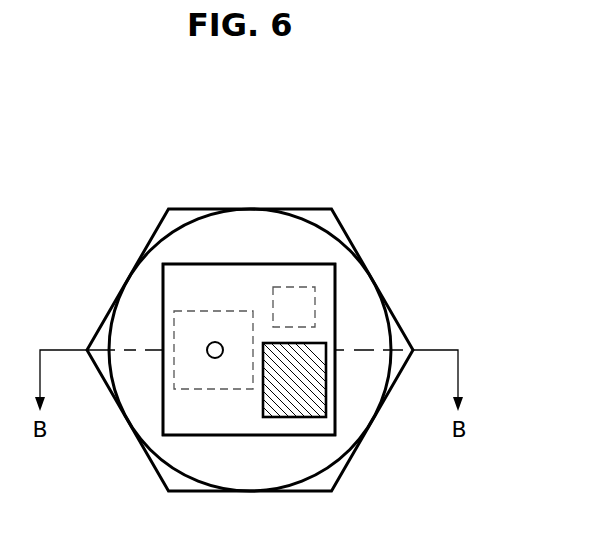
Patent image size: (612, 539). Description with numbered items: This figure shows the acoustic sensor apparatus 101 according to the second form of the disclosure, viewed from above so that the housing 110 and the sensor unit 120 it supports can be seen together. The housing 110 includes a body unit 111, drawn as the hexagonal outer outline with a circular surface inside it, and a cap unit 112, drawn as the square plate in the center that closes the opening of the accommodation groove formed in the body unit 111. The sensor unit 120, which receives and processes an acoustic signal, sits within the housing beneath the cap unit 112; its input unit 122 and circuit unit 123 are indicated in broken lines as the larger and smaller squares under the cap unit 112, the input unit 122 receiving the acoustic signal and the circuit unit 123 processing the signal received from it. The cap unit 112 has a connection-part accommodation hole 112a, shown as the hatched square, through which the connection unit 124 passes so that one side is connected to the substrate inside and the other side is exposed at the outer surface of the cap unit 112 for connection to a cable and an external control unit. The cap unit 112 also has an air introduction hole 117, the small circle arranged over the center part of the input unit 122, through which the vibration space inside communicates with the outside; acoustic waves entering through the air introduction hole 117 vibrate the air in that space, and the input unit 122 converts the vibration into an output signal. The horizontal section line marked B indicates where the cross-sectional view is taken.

The acoustic sensor apparatus 101 is at (198, 100).
The housing 110 is at (336, 190).
The body unit 111 is at (149, 236).
The cap unit 112 is at (162, 285).
The connection-part accommodation hole 112a is at (318, 345).
The air introduction hole 117 is at (207, 356).
The sensor unit 120 is at (204, 247).
The input unit 122 is at (174, 333).
The circuit unit 123 is at (315, 306).
The connection unit 124 is at (327, 388).